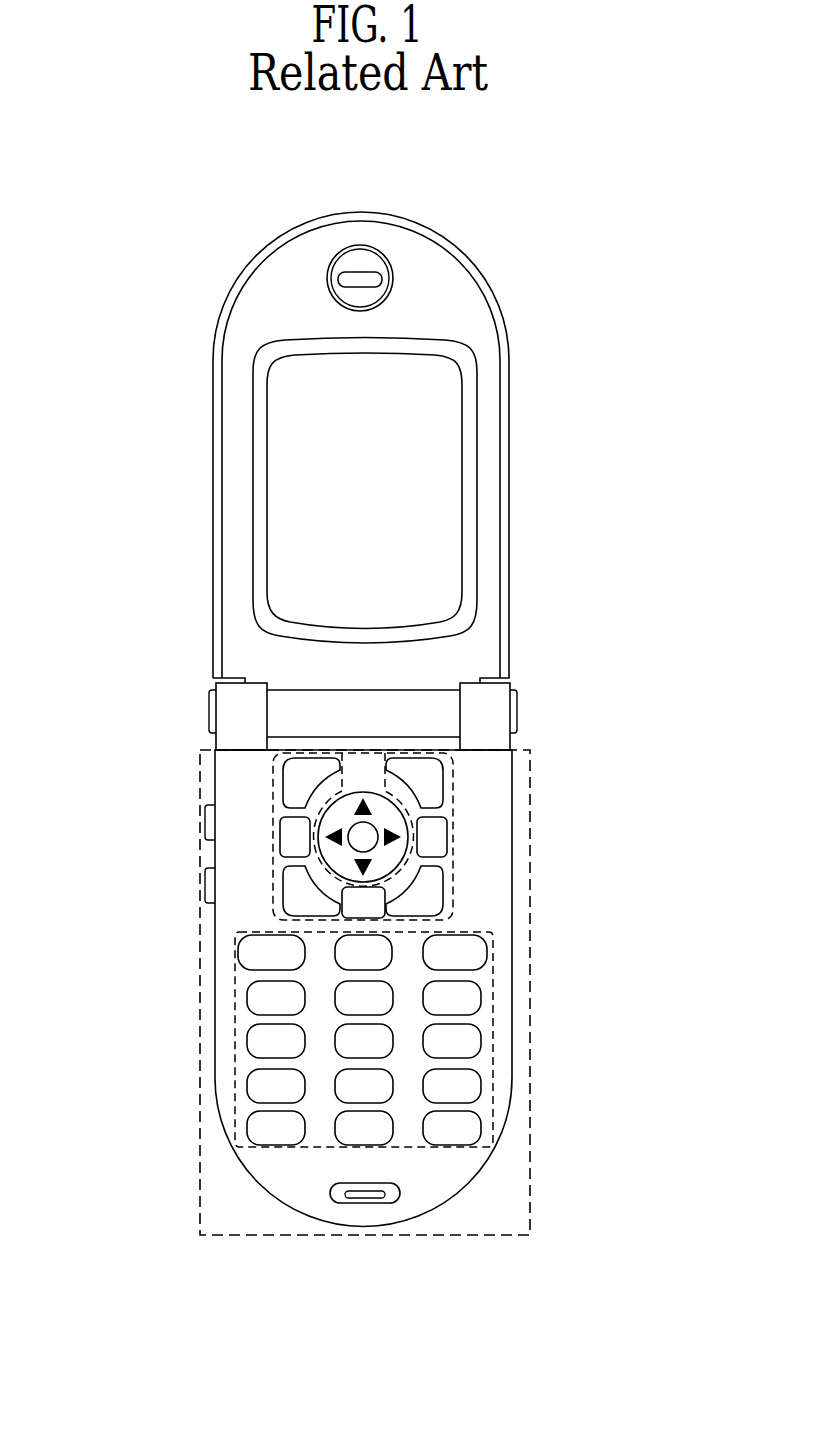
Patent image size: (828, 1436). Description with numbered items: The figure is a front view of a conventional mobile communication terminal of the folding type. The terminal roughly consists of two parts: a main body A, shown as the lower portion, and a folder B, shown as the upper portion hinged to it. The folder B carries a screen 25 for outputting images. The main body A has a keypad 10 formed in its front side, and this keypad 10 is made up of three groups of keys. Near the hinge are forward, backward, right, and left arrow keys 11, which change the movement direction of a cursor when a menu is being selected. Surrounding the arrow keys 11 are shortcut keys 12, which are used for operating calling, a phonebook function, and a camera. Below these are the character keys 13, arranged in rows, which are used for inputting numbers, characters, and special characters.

The keypad 10 is at (531, 1143).
The arrow keys 11 is at (385, 812).
The shortcut keys 12 is at (455, 864).
The character keys 13 is at (494, 1039).
The screen 25 is at (291, 521).
The main body A is at (281, 1203).
The folder B is at (512, 430).